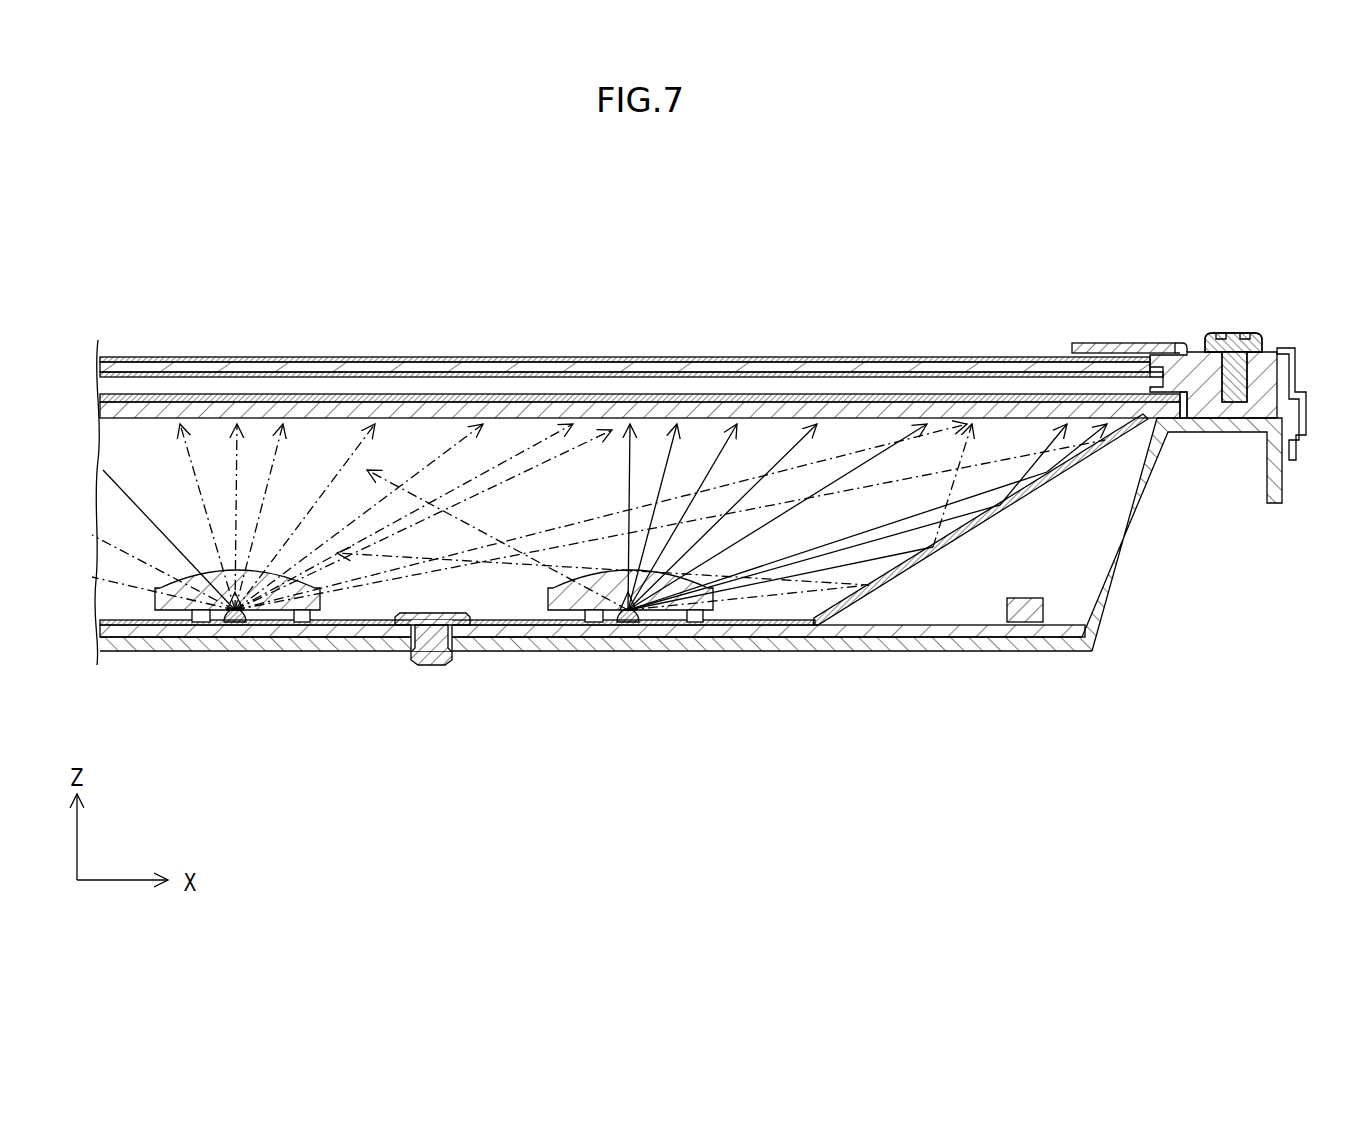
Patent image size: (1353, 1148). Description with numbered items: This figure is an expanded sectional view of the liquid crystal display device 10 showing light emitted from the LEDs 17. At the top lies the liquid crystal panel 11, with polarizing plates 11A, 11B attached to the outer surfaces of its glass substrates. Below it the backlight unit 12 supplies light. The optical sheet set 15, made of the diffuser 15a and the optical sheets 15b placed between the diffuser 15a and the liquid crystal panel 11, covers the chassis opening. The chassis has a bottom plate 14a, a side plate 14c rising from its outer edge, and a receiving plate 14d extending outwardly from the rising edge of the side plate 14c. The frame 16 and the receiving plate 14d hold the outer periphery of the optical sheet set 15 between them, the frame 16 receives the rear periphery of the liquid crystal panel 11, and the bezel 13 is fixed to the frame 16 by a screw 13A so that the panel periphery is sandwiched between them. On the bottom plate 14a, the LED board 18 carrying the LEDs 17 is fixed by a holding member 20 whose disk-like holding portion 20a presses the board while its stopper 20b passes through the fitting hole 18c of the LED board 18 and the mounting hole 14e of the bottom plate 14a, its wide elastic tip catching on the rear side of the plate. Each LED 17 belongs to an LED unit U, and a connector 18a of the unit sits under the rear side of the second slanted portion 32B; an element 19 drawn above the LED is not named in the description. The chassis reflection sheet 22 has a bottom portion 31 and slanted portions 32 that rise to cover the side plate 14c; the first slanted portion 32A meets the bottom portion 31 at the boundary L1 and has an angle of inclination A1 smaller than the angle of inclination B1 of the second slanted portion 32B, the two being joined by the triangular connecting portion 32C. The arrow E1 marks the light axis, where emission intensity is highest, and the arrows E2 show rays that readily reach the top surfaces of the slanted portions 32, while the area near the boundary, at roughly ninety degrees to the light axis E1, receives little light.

The liquid crystal display device 10 is at (712, 332).
The liquid crystal panel 11 is at (631, 321).
The polarizing plate 11A is at (343, 357).
The polarizing plate 11B is at (413, 372).
The backlight unit 12 is at (303, 686).
The bezel 13 is at (1167, 295).
The screw 13A is at (1233, 360).
The bottom plate 14a is at (128, 645).
The side plate 14c is at (1097, 641).
The receiving plate 14d is at (1213, 432).
The mounting hole 14e is at (446, 658).
The optical sheet set 15 is at (643, 319).
The diffuser 15a is at (571, 403).
The optical sheet 15b is at (488, 394).
The frame 16 is at (1200, 385).
The LED 17 is at (236, 612).
The LED board 18 is at (707, 640).
The connector 18a is at (1023, 614).
The fitting hole 18c is at (438, 660).
The diffuser lens 19 is at (185, 600).
The holding member 20 is at (410, 732).
The holding portion 20a is at (397, 636).
The stopper 20b is at (420, 660).
The chassis reflection sheet 22 is at (702, 598).
The bottom portion 31 is at (758, 626).
The slanted portion 32 is at (1037, 589).
The first slanted portion 32A is at (902, 574).
The second slanted portion 32B is at (1000, 508).
The connecting portion 32C is at (1040, 483).
The light axis E1 is at (650, 503).
The rays of light E2 is at (973, 455).
The boundary L1 is at (815, 619).
The angle of inclination A1 is at (848, 620).
The angle of inclination B1 is at (955, 620).
The LED unit U is at (1052, 620).